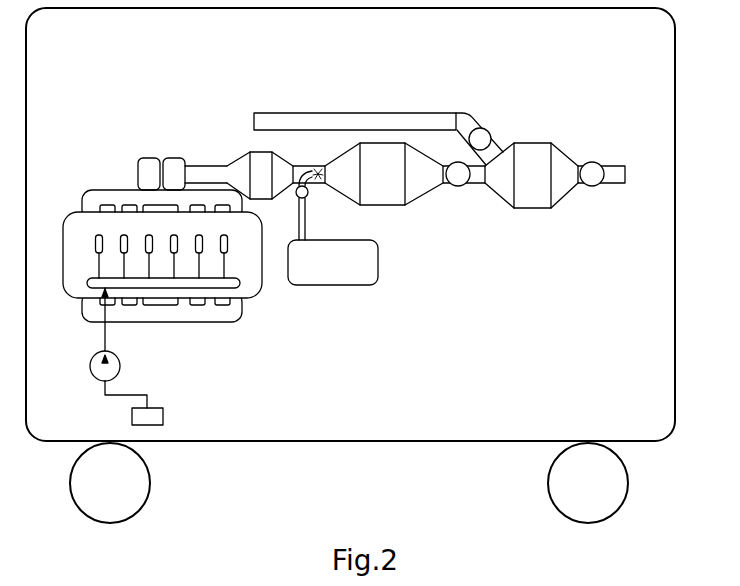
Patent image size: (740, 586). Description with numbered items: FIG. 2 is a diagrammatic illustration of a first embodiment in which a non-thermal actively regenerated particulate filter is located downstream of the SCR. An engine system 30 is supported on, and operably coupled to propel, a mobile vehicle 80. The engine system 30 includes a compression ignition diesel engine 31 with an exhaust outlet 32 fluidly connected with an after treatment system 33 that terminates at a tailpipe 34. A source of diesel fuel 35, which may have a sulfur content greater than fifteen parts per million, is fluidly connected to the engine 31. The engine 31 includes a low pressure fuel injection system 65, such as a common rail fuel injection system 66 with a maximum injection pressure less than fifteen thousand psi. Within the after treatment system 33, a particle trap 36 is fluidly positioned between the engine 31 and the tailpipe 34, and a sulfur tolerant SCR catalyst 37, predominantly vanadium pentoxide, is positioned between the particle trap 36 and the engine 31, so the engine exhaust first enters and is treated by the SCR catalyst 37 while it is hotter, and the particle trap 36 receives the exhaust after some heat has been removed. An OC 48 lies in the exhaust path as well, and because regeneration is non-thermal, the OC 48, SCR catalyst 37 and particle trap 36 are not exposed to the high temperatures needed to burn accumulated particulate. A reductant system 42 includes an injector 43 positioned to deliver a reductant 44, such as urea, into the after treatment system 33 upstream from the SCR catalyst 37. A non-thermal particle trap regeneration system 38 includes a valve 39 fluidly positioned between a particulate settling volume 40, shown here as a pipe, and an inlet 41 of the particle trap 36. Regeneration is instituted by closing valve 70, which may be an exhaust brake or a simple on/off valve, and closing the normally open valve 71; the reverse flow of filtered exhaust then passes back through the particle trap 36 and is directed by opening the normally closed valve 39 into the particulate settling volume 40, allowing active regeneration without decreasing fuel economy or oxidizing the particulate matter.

The engine system 30 is at (388, 75).
The compression ignition diesel engine 31 is at (249, 310).
The exhaust outlet 32 is at (147, 184).
The after treatment system 33 is at (448, 242).
The tailpipe 34 is at (614, 166).
The source of diesel fuel 35 is at (159, 396).
The particle trap 36 is at (533, 215).
The SCR catalyst 37 is at (383, 213).
The non-thermal particle trap regeneration system 38 is at (487, 116).
The valve 39 is at (492, 136).
The particulate settling volume 40 is at (323, 108).
The inlet 41 is at (503, 187).
The reductant system 42 is at (341, 291).
The injector 43 is at (316, 191).
The reductant 44 is at (314, 172).
The OC 48 is at (254, 146).
The low pressure fuel injection system 65 is at (85, 292).
The common rail fuel injection system 66 is at (89, 258).
The valve 70 is at (592, 186).
The normally open valve 71 is at (457, 192).
The mobile vehicle 80 is at (684, 187).